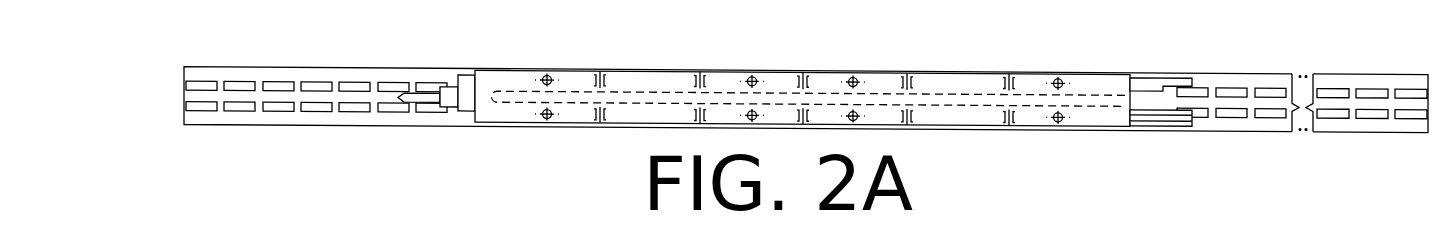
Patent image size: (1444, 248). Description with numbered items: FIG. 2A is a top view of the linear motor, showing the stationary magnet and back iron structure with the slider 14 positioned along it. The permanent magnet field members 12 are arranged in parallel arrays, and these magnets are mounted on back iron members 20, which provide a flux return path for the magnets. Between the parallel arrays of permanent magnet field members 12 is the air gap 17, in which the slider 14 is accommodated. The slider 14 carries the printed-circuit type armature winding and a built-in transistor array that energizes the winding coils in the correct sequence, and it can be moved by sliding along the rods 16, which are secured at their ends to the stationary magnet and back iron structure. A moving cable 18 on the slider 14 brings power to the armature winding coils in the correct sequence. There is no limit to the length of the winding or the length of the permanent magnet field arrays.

The permanent magnet field member 12 is at (1203, 92).
The slider 14 is at (823, 49).
The rod 16 is at (1175, 83).
The air gap 17 is at (1235, 106).
The moving cable 18 is at (1146, 88).
The back iron member 20 is at (324, 77).